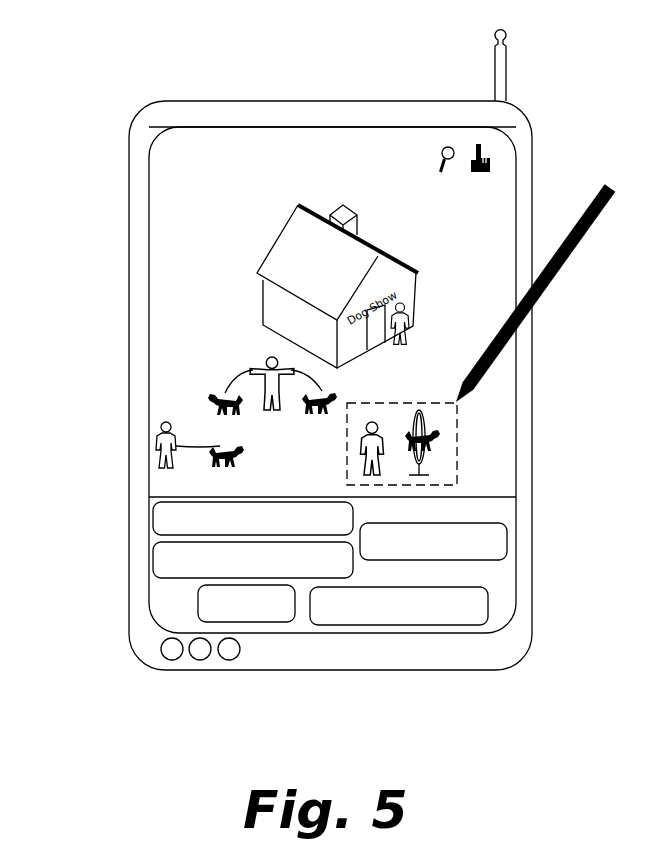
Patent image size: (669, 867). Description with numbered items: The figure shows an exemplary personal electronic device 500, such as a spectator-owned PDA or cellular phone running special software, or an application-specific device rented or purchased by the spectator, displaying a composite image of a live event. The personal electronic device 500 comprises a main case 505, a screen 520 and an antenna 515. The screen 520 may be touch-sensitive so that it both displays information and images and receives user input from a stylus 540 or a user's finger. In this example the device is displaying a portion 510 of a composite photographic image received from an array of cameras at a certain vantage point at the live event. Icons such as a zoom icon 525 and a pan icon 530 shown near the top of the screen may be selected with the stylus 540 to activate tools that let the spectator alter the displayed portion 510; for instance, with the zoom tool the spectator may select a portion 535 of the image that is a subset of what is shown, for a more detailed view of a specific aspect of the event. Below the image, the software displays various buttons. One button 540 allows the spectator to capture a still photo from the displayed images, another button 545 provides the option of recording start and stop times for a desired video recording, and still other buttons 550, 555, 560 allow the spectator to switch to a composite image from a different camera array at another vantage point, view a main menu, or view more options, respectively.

The personal electronic device 500 is at (126, 78).
The main case 505 is at (531, 195).
The portion of composite photographic image 510 is at (173, 295).
The antenna 515 is at (502, 74).
The screen 520 is at (508, 634).
The zoom icon 525 is at (428, 155).
The pan icon 530 is at (465, 144).
The selected portion of composite photographic image 535 is at (443, 447).
The stylus / capture photo button 540 is at (553, 275).
The video start/stop button 545 is at (163, 570).
The next view button 550 is at (497, 552).
The menu button 555 is at (285, 613).
The more options button 560 is at (320, 622).